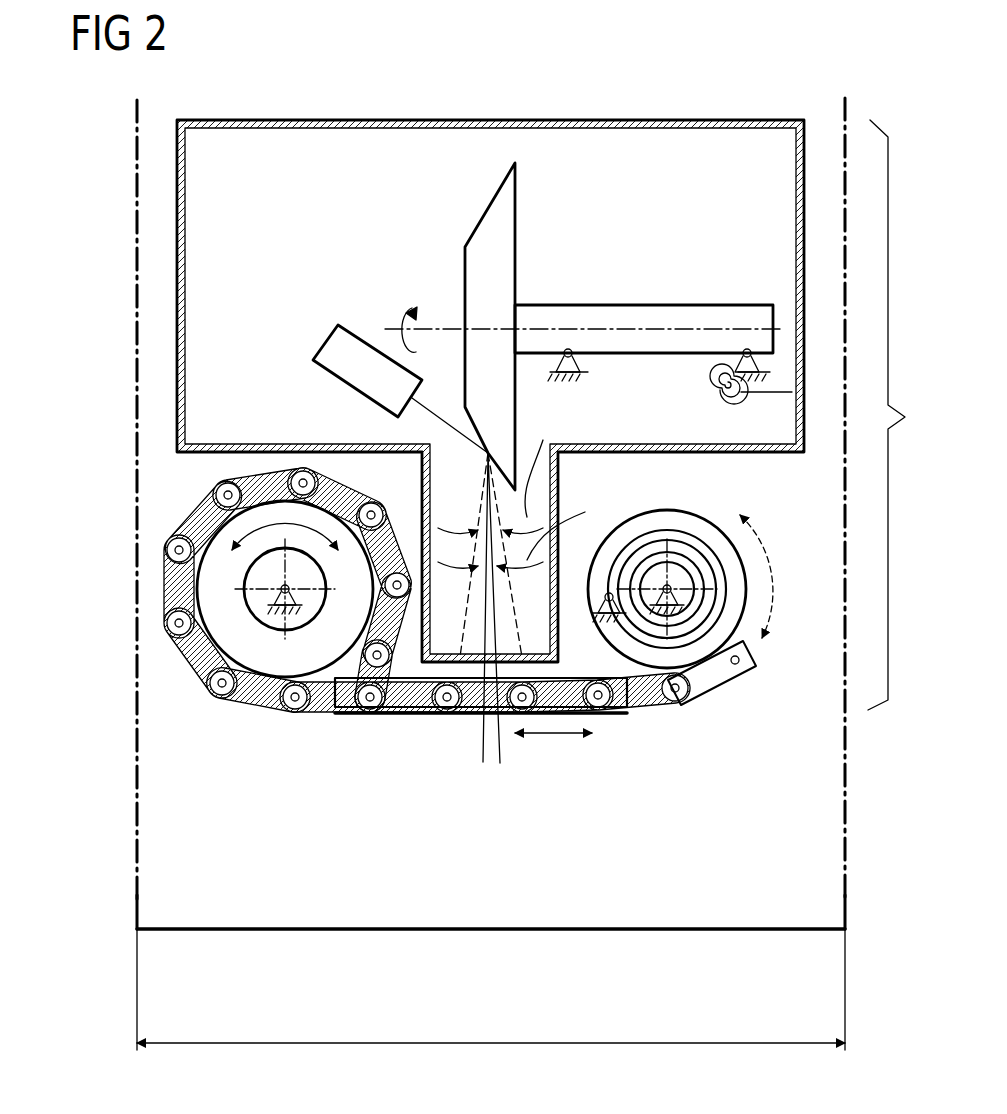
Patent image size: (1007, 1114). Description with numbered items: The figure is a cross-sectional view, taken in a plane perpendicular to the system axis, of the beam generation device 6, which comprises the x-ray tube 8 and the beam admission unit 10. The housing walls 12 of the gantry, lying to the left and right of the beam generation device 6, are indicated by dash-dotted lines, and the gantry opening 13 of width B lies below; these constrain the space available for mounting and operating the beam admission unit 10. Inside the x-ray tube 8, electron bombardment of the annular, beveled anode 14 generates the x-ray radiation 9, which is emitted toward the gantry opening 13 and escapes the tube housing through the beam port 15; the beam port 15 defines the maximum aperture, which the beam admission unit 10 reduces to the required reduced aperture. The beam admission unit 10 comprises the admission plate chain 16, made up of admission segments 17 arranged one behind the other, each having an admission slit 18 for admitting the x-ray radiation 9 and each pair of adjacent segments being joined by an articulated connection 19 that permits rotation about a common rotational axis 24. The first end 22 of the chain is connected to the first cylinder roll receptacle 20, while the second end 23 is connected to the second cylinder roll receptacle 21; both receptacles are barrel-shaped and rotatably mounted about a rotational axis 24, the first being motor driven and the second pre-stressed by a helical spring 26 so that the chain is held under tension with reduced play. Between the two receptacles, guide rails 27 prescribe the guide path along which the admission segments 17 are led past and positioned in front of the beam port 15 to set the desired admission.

The beam generation device 6 is at (899, 415).
The x-ray tube 8 is at (563, 120).
The x-ray radiation 9 is at (482, 502).
The beam admission unit 10 is at (298, 750).
The housing walls 12 is at (135, 170).
The gantry opening 13 is at (293, 969).
The anode 14 is at (517, 240).
The beam port 15 is at (475, 690).
The admission plate chain 16 is at (392, 595).
The admission segments 17 is at (158, 630).
The admission slit 18 is at (327, 700).
The articulated connection 19 is at (687, 700).
The first cylinder roll receptacle 20 is at (227, 523).
The second cylinder roll receptacle 21 is at (703, 518).
The first end 22 is at (378, 708).
The second end 23 is at (756, 653).
The rotational axis 24 is at (281, 588).
The spring 26 is at (665, 543).
The guide rails 27 is at (618, 718).